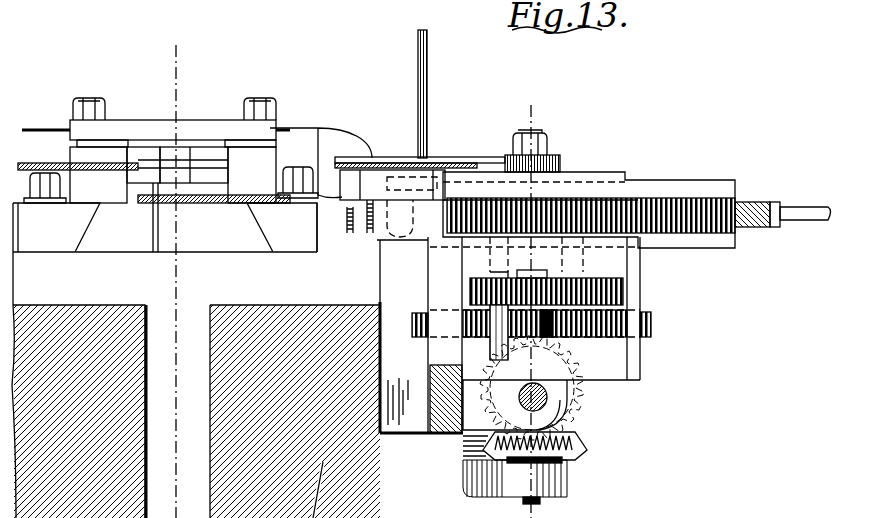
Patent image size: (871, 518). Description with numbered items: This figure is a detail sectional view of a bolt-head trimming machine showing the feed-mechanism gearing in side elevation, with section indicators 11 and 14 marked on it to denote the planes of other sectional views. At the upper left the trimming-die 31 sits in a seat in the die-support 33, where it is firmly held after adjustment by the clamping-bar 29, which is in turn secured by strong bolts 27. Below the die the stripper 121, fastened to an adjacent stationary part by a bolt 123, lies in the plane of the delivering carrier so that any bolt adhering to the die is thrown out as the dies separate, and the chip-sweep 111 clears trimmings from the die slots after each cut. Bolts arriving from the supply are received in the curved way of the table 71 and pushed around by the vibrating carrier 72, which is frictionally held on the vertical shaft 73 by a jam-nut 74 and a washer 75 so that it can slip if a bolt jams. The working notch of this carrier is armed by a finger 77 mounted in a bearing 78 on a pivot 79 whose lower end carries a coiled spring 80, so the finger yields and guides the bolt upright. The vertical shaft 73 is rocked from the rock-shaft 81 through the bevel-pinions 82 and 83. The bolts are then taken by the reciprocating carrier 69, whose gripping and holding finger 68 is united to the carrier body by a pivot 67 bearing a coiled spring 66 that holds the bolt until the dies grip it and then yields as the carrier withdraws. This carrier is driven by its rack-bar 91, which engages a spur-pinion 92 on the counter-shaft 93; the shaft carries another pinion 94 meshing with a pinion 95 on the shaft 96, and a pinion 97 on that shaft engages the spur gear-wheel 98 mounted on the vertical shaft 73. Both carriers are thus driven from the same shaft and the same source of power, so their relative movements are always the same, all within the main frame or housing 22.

The vertical axis line 11 is at (565, 103).
The section line 14 is at (115, 52).
The main frame or housing 22 is at (403, 80).
The bolts 27 is at (88, 99).
The clamping-bar 29 is at (203, 132).
The trimming-die 31 is at (141, 158).
The die-support 33 is at (127, 215).
The coiled spring 66 is at (348, 213).
The pivot 67 is at (352, 237).
The gripping and holding finger 68 is at (320, 128).
The reciprocating carrier 69 is at (655, 185).
The table 71 is at (392, 157).
The vibrating carrier 72 is at (462, 158).
The vertical shaft 73 is at (542, 130).
The jam-nut 74 is at (548, 143).
The washer 75 is at (507, 147).
The finger 77 is at (342, 200).
The bearing 78 is at (422, 175).
The pivot 79 is at (372, 238).
The coiled spring 80 is at (363, 233).
The rock-shaft 81 is at (547, 402).
The bevel-pinion 82 is at (577, 423).
The bevel-pinion 83 is at (568, 453).
The rack-bar 91 is at (683, 197).
The spur-pinion 92 is at (553, 200).
The counter-shaft 93 is at (540, 338).
The pinion 94 is at (470, 292).
The pinion 95 is at (625, 288).
The shaft 96 is at (575, 273).
The pinion 97 is at (587, 337).
The spur gear-wheel 98 is at (416, 337).
The chip-sweep 111 is at (41, 160).
The stripper 121 is at (222, 203).
The bolt 123 is at (292, 177).